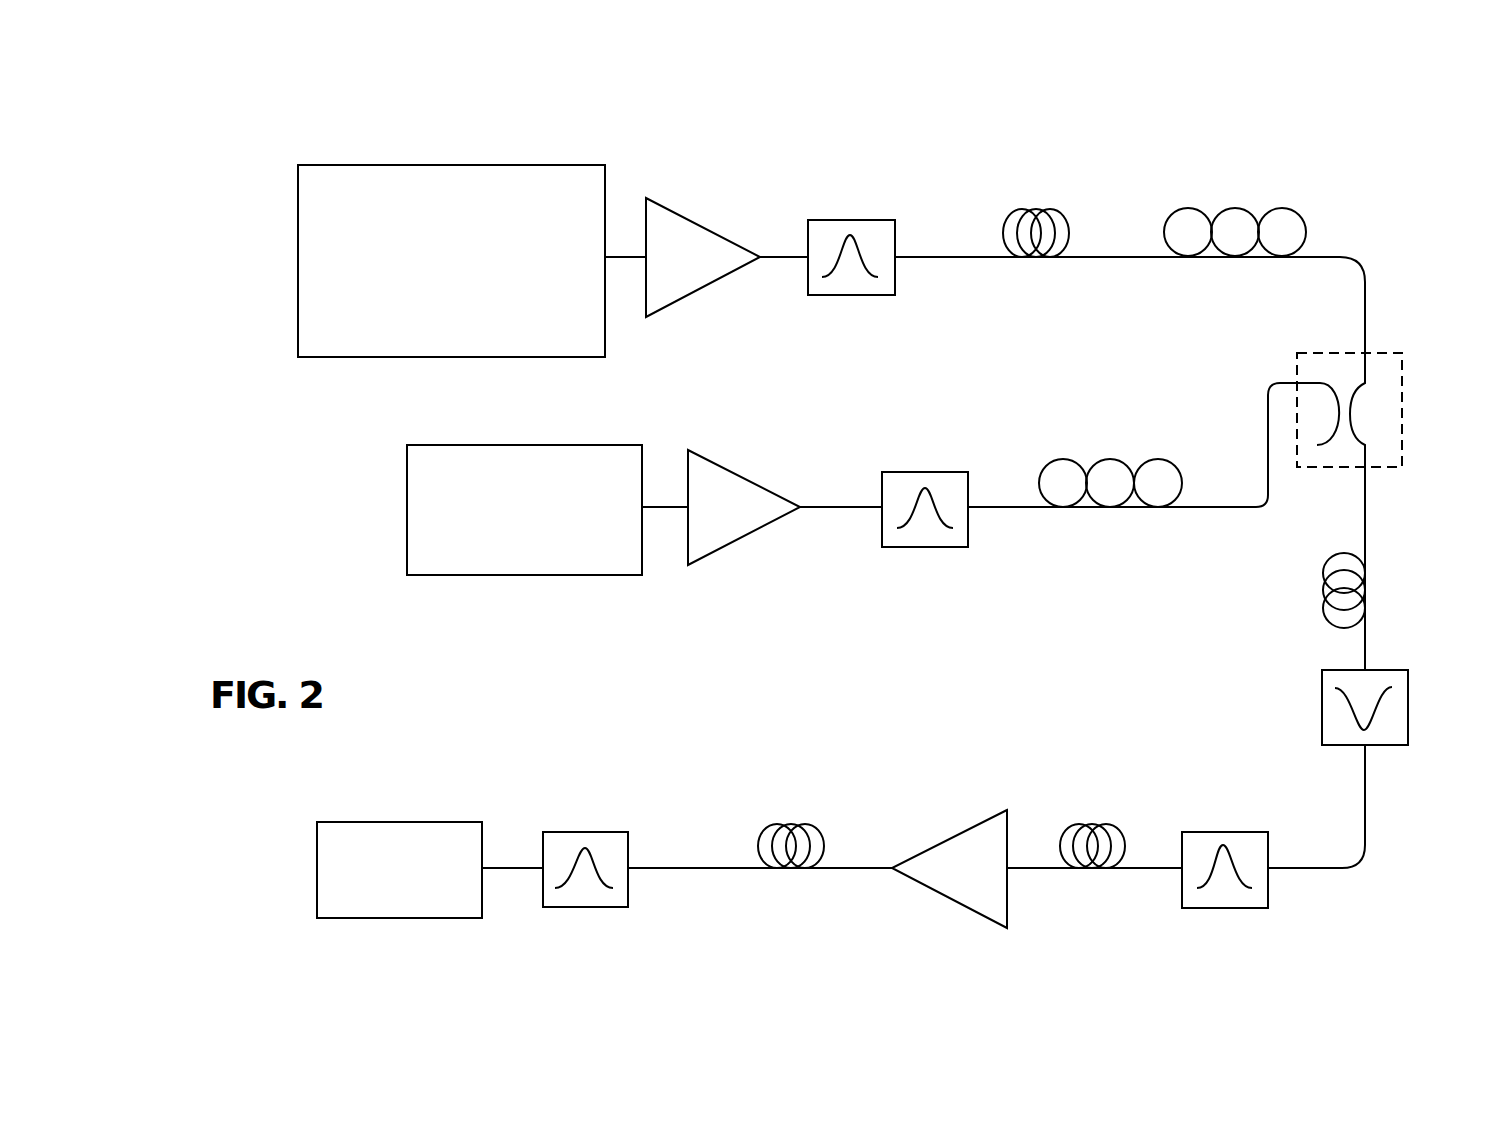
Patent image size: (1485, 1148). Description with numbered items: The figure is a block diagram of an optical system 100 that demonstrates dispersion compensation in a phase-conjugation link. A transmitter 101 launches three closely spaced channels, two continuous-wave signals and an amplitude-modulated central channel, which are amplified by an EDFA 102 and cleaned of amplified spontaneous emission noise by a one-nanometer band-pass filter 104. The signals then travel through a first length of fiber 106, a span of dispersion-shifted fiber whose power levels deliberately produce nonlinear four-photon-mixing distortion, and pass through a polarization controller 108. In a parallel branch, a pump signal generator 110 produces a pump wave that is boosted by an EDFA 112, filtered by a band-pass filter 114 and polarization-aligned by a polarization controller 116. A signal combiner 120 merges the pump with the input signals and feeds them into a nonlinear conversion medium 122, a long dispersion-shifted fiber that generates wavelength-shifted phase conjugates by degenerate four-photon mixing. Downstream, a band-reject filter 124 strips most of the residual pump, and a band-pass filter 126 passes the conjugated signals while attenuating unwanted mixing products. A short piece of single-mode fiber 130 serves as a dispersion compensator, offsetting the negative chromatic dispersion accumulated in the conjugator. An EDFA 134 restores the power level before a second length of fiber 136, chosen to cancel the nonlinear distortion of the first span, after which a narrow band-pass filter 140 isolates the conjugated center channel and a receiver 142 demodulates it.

The optical system 100 is at (224, 119).
The transmitter 101 is at (467, 165).
The EDFA 102 is at (698, 223).
The band-pass filter 104 is at (851, 220).
The first length of fiber 106 is at (1023, 192).
The polarization controller 108 is at (1220, 190).
The pump signal generator 110 is at (518, 445).
The EDFA 112 is at (756, 456).
The band-pass filter 114 is at (925, 472).
The polarization controller 116 is at (1099, 444).
The signal combiner 120 is at (1297, 372).
The nonlinear conversion medium 122 is at (1386, 580).
The band-reject filter 124 is at (1322, 708).
The band-pass filter 126 is at (1232, 832).
The single-mode fiber 130 is at (1087, 807).
The EDFA 134 is at (945, 842).
The second length of fiber 136 is at (789, 807).
The band-pass filter 140 is at (588, 832).
The receiver 142 is at (405, 822).